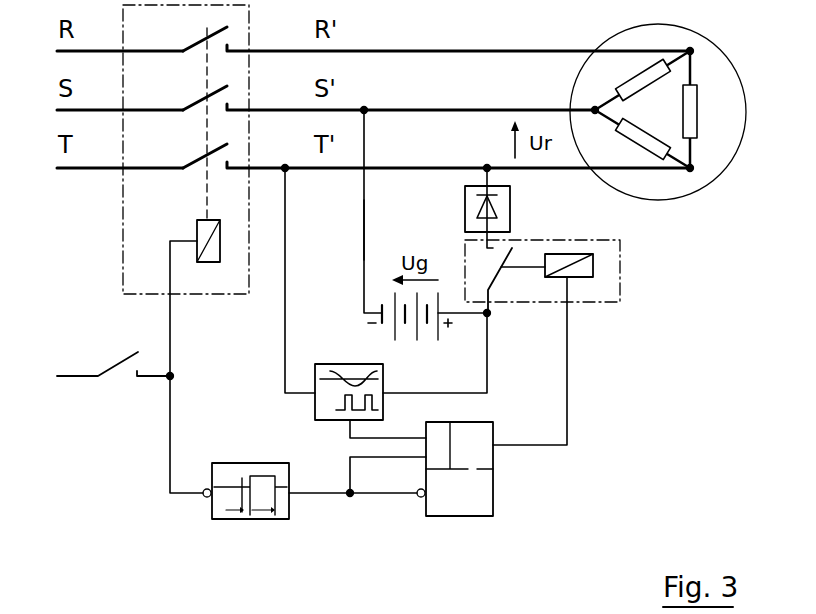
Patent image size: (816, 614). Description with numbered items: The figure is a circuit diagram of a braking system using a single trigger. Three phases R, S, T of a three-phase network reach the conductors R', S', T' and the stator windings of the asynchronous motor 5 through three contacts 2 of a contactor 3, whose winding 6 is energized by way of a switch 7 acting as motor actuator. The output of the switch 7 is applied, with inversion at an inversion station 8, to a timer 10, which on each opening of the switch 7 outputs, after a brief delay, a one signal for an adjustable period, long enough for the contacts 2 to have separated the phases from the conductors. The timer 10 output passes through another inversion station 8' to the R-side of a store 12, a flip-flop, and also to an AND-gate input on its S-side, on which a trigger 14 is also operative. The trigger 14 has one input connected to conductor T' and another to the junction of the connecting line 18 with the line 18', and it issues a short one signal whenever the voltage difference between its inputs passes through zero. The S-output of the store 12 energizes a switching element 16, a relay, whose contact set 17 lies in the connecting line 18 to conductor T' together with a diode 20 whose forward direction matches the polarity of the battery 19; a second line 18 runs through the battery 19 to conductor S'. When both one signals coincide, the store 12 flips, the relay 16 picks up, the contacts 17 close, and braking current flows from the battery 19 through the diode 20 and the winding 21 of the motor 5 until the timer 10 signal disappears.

The contacts 2 is at (194, 119).
The contactor 3 is at (123, 232).
The asynchronous motor 5 is at (658, 133).
The winding 6 is at (197, 232).
The switch 7 is at (120, 362).
The inversion station 8 is at (194, 510).
The inversion station 8' is at (408, 509).
The timer 10 is at (257, 463).
The store 12 is at (493, 486).
The trigger 14 is at (346, 364).
The switching element 16 is at (587, 302).
The contact set 17 is at (493, 281).
The connecting line 18 is at (521, 251).
The connecting line 18' is at (387, 230).
The battery 19 is at (416, 331).
The diode 20 is at (510, 210).
The winding 21 is at (637, 152).